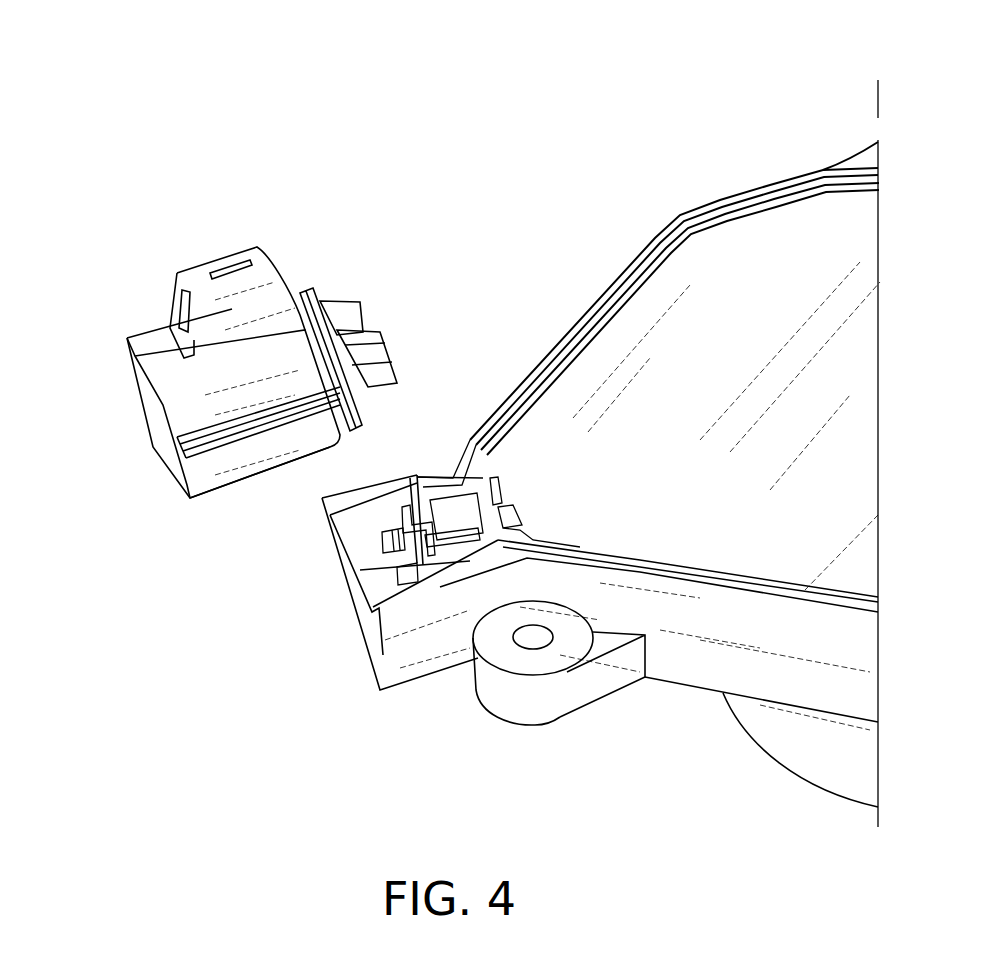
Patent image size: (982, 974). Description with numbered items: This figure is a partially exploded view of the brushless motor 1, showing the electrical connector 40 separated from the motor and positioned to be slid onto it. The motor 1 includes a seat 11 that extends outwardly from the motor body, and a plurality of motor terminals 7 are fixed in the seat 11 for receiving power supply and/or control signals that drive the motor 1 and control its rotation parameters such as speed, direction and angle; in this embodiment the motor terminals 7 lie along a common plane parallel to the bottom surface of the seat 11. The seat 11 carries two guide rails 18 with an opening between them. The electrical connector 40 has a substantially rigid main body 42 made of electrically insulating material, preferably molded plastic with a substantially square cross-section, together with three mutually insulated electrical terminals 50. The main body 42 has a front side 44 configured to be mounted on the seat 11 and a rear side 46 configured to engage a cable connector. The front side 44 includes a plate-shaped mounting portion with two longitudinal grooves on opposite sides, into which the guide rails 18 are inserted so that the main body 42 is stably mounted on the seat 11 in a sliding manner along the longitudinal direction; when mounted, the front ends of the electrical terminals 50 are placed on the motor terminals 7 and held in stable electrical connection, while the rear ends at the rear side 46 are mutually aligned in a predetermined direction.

The motor 1 is at (777, 273).
The motor terminals 7 is at (397, 570).
The seat 11 is at (382, 541).
The guide rails 18 is at (342, 537).
The electrical connector 40 is at (292, 276).
The main body 42 is at (210, 415).
The front side 44 is at (320, 297).
The rear side 46 is at (157, 420).
The electrical terminals 50 is at (353, 320).